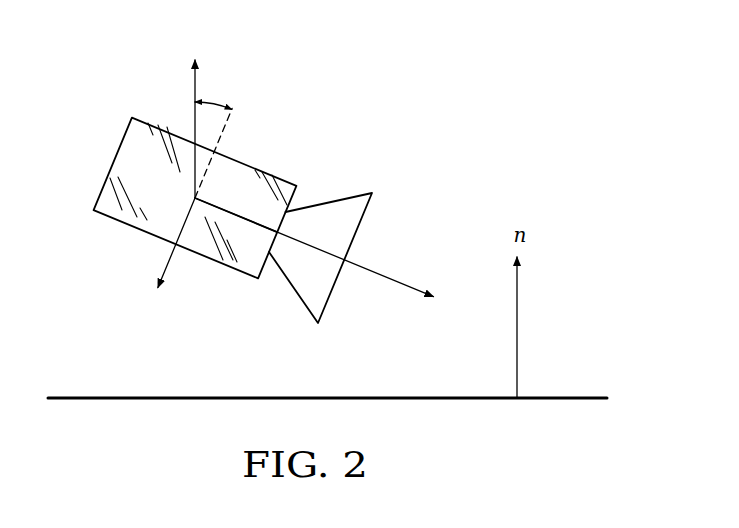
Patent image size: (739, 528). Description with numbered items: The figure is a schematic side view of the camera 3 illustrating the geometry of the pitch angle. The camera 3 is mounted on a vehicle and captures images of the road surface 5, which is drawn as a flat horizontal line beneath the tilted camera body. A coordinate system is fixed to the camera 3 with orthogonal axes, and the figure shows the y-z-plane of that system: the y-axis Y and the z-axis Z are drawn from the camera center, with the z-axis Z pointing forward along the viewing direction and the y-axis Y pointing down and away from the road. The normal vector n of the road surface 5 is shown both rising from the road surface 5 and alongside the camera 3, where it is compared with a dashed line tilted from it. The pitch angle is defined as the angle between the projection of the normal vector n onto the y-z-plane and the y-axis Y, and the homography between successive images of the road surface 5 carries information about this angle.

The camera 3 is at (123, 135).
The road surface 5 is at (557, 395).
The normal vector n is at (197, 115).
The y-axis Y is at (165, 248).
The z-axis Z is at (315, 261).